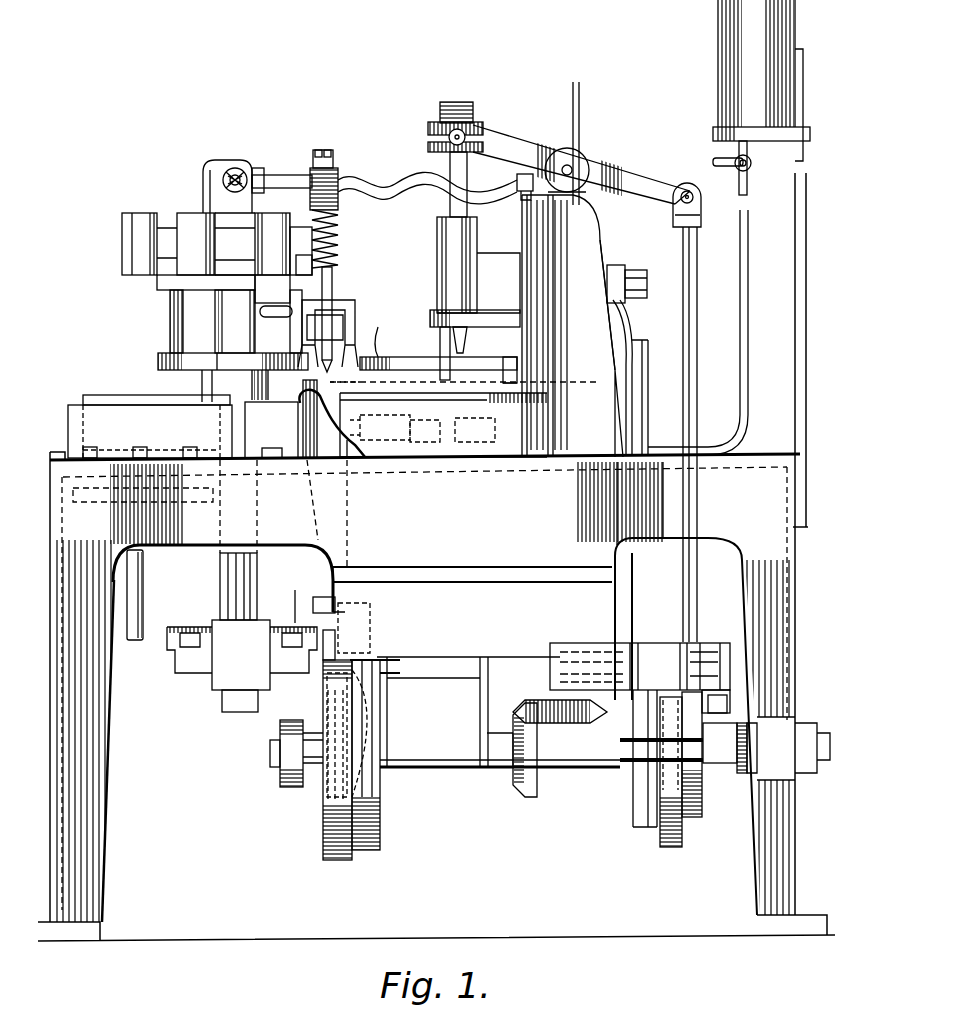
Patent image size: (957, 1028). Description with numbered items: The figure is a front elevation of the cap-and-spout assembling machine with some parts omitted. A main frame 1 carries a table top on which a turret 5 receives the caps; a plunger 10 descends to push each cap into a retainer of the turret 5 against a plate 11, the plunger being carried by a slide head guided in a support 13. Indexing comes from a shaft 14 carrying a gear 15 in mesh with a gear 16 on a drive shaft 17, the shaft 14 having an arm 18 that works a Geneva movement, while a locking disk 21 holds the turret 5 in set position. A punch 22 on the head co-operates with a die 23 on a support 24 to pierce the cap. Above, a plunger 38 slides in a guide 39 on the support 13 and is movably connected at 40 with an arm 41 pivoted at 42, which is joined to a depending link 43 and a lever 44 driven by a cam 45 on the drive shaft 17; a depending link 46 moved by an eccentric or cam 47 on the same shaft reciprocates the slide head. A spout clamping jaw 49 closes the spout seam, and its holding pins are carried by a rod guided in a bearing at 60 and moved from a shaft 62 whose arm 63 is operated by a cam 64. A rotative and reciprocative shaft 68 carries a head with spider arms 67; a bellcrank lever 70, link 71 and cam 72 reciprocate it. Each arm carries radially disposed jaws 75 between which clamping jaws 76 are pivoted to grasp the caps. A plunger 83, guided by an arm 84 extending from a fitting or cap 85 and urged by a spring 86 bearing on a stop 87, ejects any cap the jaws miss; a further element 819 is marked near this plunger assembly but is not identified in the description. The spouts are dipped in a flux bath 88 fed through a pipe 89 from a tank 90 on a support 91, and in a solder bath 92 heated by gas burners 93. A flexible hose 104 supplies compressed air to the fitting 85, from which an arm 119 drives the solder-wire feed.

The main frame 1 is at (436, 661).
The turret 5 is at (556, 412).
The plunger 10 is at (440, 345).
The plate 11 is at (466, 380).
The support 13 is at (556, 333).
The shaft 14 is at (555, 665).
The gear 15 is at (526, 708).
The gear 16 is at (520, 800).
The drive shaft 17 is at (598, 773).
The arm 18 is at (590, 305).
The locking disk 21 is at (379, 333).
The punch 22 is at (517, 372).
The die 23 is at (503, 374).
The support 24 is at (518, 418).
The plunger 38 is at (470, 330).
The guide 39 is at (437, 252).
The movable connection 40 is at (440, 137).
The arm 41 is at (513, 157).
The pivot 42 is at (580, 158).
The link 43 is at (694, 335).
The lever 44 is at (720, 697).
The cam 45 is at (703, 812).
The link 46 is at (660, 437).
The eccentric or cam 47 is at (676, 850).
The spout clamping jaw 49 is at (455, 448).
The bearing 60 is at (413, 445).
The shaft 62 is at (335, 578).
The arm 63 is at (372, 620).
The cam 64 is at (380, 828).
The spider arm 67 is at (150, 258).
The shaft 68 is at (226, 574).
The bellcrank lever 70 is at (180, 680).
The link 71 is at (296, 735).
The cam 72 is at (323, 848).
The radially disposed jaws 75 is at (256, 297).
The clamping jaws 76 is at (312, 333).
The plunger 83 is at (355, 315).
The arm 84 is at (300, 176).
The fitting or cap 85 is at (250, 168).
The spring 86 is at (340, 222).
The stop 87 is at (298, 262).
The flux bath 88 is at (281, 419).
The pipe 89 is at (713, 332).
The tank 90 is at (749, 97).
The support 91 is at (796, 272).
The solder bath 92 is at (190, 455).
The gas burners 93 is at (93, 455).
The flexible hose 104 is at (396, 186).
The arm 119 is at (233, 170).
The rod 819 is at (350, 268).